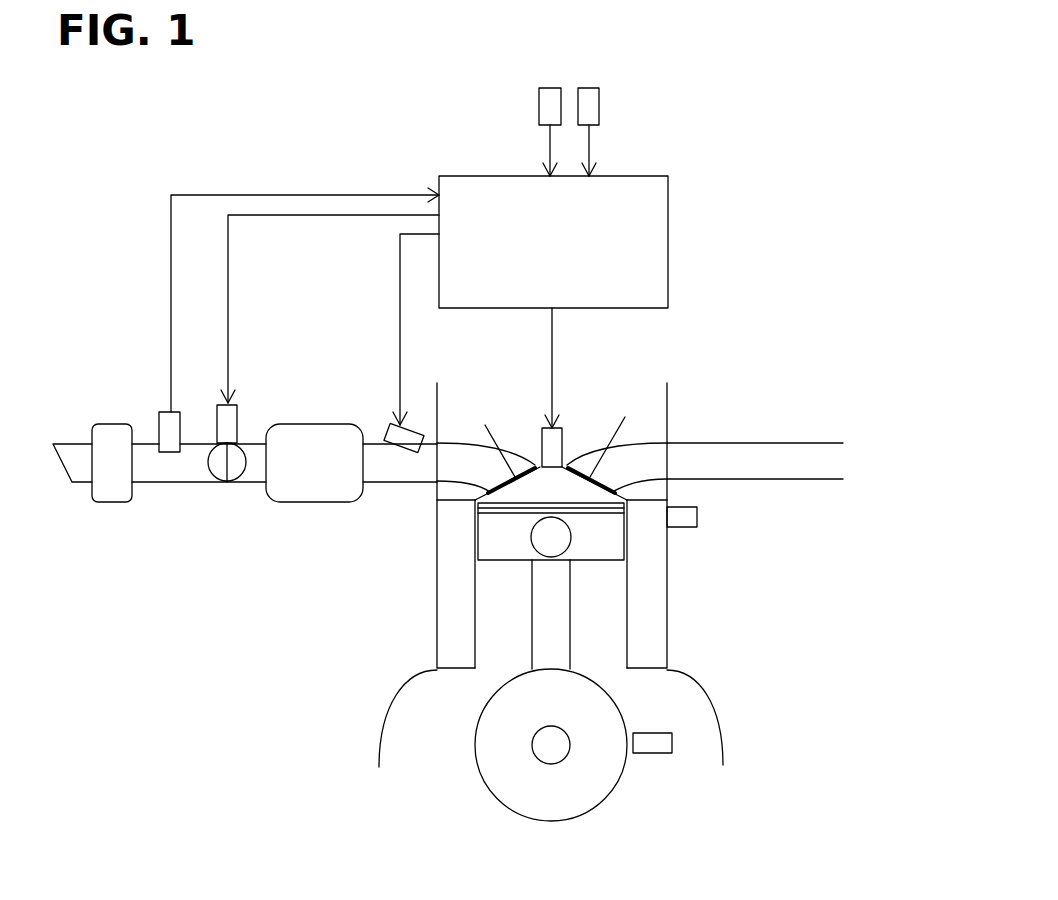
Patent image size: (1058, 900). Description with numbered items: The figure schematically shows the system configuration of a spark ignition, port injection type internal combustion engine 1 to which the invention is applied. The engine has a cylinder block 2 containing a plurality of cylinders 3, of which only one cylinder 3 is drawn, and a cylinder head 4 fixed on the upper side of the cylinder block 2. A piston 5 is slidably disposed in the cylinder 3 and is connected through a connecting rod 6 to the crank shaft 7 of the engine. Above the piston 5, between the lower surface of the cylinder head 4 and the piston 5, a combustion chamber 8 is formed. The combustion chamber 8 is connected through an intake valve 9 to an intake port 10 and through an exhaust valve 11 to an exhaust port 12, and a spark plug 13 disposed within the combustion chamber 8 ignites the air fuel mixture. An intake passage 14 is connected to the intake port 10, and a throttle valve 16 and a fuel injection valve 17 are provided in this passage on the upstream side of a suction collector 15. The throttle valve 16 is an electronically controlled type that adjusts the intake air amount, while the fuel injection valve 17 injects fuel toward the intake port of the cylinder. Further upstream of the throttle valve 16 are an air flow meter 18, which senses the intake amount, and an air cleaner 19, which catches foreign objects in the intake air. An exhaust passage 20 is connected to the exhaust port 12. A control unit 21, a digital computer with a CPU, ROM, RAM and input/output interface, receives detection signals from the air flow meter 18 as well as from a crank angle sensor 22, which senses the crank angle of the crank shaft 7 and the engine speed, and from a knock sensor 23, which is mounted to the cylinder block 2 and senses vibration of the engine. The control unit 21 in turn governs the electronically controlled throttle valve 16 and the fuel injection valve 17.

The internal combustion engine 1 is at (365, 745).
The cylinder block 2 is at (647, 637).
The cylinder 3 is at (480, 586).
The cylinder head 4 is at (447, 421).
The piston 5 is at (490, 535).
The connecting rod 6 is at (543, 633).
The crank shaft 7 is at (583, 802).
The combustion chamber 8 is at (556, 482).
The intake valve 9 is at (522, 457).
The intake port 10 is at (465, 452).
The exhaust valve 11 is at (582, 465).
The exhaust port 12 is at (648, 447).
The spark plug 13 is at (533, 462).
The intake passage 14 is at (188, 473).
The suction collector 15 is at (292, 493).
The throttle valve 16 is at (235, 458).
The fuel injection valve 17 is at (388, 427).
The air flow meter 18 is at (167, 427).
The air cleaner 19 is at (112, 495).
The exhaust passage 20 is at (733, 450).
The control unit 21 is at (637, 190).
The crank angle sensor 22 is at (551, 88).
The knock sensor 23 is at (592, 88).